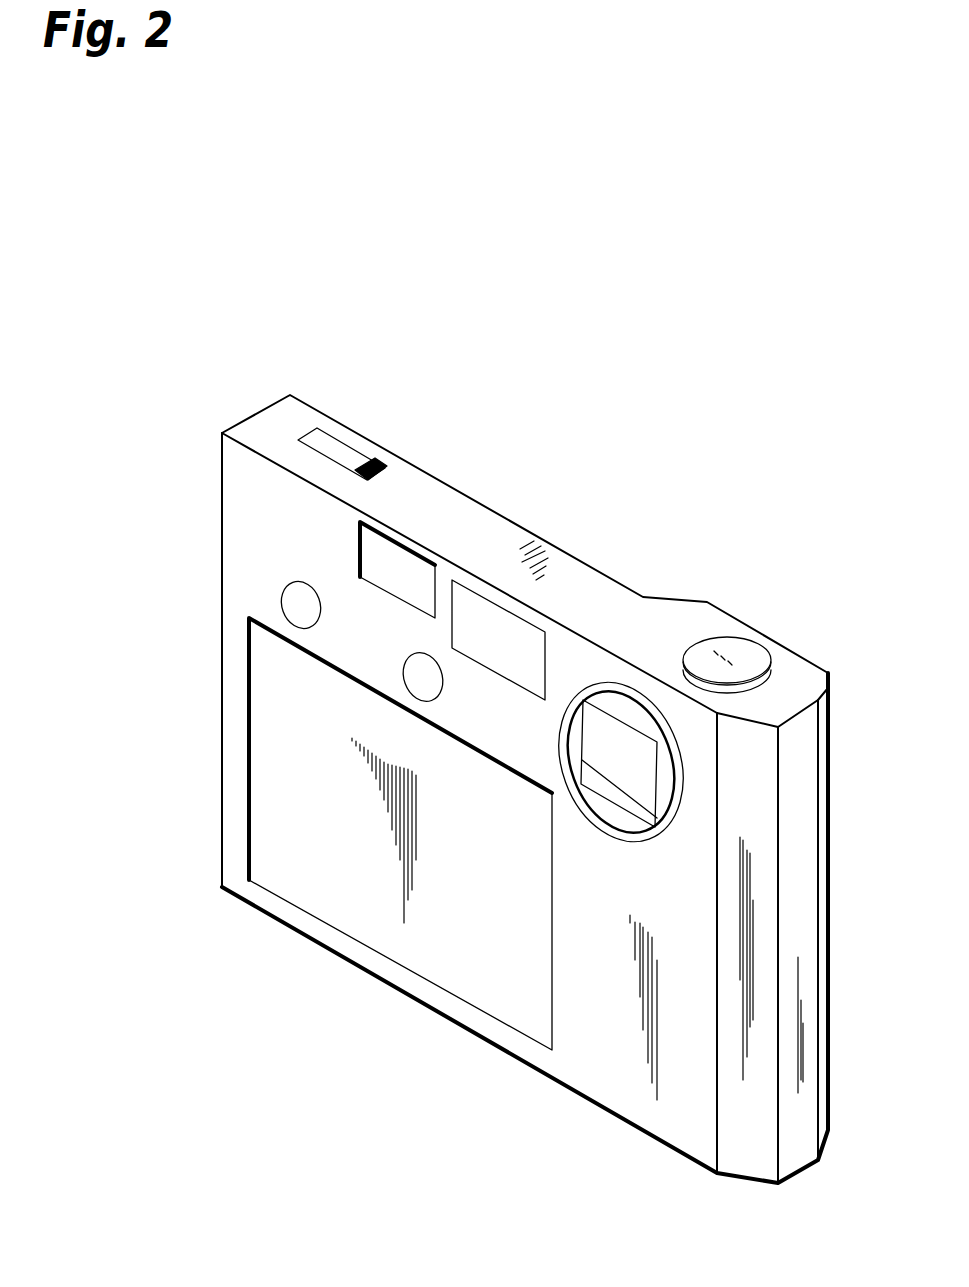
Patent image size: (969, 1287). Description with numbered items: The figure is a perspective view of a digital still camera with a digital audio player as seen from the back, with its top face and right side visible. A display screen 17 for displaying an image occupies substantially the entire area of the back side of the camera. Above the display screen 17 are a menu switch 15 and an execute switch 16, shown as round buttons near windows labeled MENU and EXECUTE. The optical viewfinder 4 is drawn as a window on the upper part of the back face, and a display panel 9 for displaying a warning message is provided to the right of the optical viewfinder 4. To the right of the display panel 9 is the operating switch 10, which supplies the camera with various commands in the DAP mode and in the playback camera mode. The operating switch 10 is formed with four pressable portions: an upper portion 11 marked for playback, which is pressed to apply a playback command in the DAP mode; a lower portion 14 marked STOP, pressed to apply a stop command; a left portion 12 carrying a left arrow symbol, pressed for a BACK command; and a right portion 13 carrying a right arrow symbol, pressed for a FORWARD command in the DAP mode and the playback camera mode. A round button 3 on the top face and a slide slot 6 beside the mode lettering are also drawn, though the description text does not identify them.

The shutter release button 3 is at (703, 657).
The optical viewfinder 4 is at (383, 568).
The mode selection slide switch 6 is at (333, 443).
The display panel 9 is at (523, 647).
The operating switch 10 is at (683, 803).
The upper portion 11 is at (600, 703).
The left portion 12 is at (583, 762).
The right portion 13 is at (657, 802).
The lower portion 14 is at (620, 828).
The menu switch 15 is at (297, 605).
The execute switch 16 is at (415, 670).
The display screen 17 is at (372, 907).